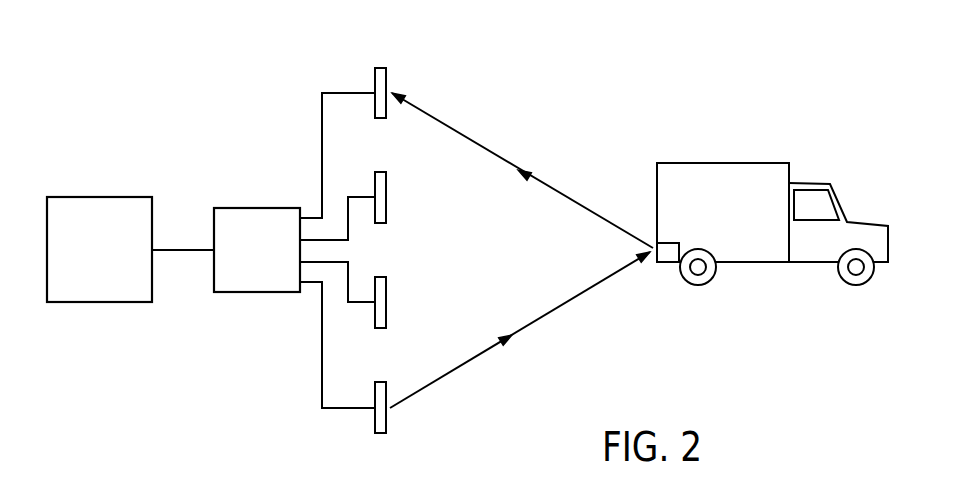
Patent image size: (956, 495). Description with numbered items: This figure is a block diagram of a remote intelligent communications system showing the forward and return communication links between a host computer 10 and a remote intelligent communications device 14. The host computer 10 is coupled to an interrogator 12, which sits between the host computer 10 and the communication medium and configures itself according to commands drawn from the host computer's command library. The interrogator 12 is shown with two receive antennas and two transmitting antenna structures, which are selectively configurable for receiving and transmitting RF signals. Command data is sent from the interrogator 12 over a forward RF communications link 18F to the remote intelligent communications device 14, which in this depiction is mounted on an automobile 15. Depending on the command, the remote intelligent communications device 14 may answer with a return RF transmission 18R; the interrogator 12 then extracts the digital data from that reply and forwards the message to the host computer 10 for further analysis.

The host computer 10 is at (88, 262).
The interrogator 12 is at (245, 261).
The return RF transmission 18R is at (542, 185).
The forward RF communications link 18F is at (542, 320).
The automobile 15 is at (772, 151).
The remote intelligent communications device 14 is at (668, 253).